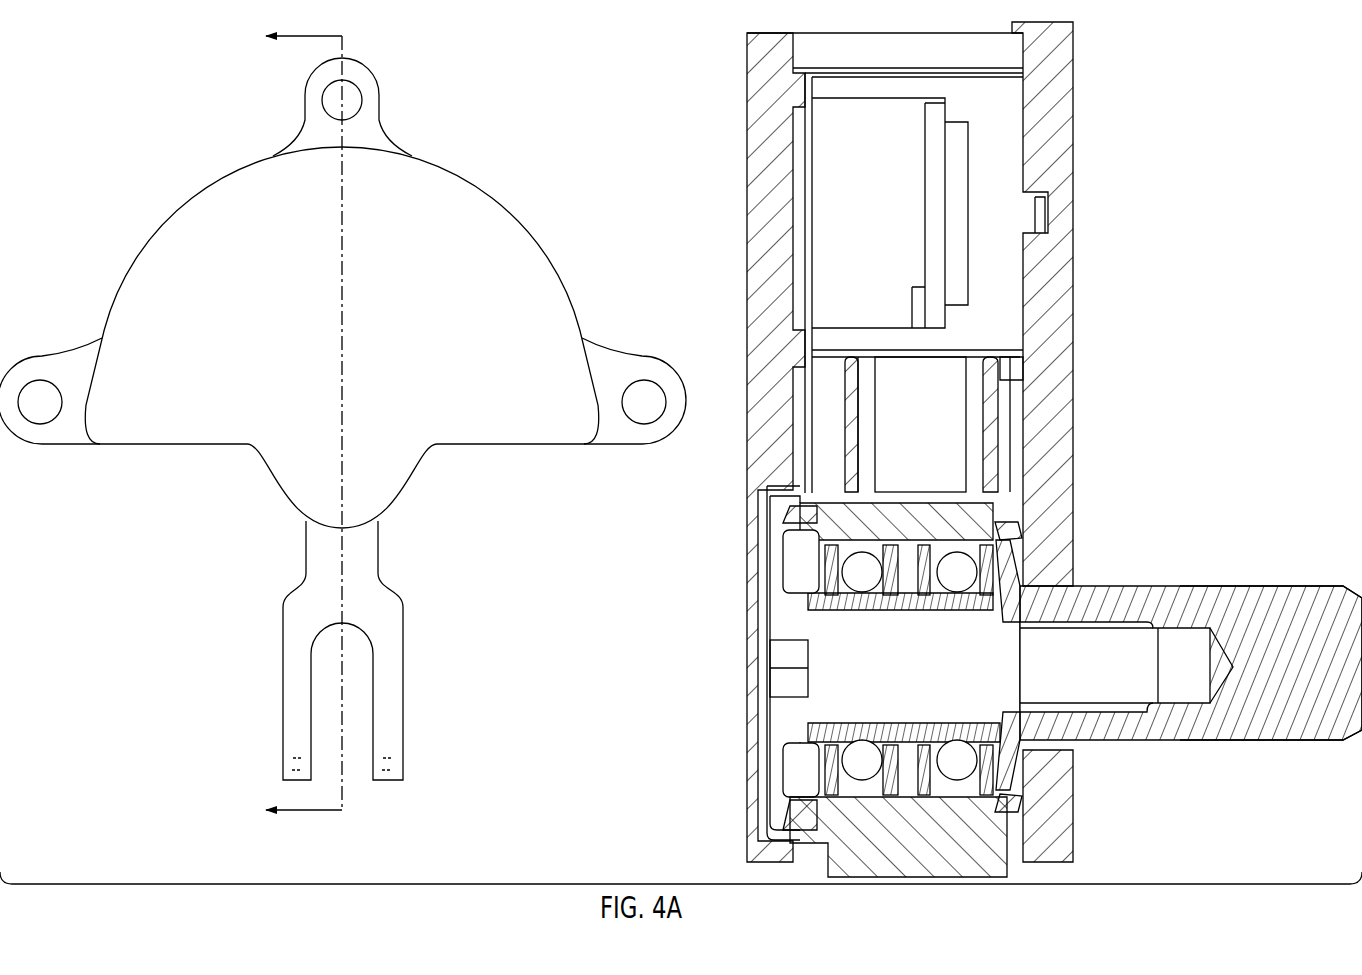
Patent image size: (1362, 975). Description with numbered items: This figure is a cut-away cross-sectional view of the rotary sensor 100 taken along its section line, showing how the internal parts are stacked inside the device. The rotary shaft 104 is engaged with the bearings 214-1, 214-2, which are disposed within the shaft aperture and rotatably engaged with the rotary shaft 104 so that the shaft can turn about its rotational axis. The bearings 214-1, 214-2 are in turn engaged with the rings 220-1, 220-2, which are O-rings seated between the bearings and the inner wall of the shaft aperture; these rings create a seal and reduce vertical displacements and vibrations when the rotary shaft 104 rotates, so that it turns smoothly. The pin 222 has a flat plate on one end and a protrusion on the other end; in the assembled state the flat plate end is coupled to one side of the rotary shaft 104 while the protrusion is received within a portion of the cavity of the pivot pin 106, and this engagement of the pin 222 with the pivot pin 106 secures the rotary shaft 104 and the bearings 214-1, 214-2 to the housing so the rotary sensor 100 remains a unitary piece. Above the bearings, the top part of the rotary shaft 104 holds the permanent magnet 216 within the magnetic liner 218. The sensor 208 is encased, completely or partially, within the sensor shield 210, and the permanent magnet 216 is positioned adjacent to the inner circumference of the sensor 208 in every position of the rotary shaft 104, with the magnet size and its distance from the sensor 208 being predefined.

The rotary sensor 100 is at (133, 200).
The rotary shaft 104 is at (870, 835).
The pivot pin 106 is at (1320, 586).
The sensor 208 is at (944, 177).
The sensor shield 210 is at (1017, 295).
The bearing 214-1 is at (1004, 570).
The bearing 214-2 is at (818, 762).
The permanent magnet 216 is at (953, 413).
The magnetic liner 218 is at (988, 445).
The ring 220-1 is at (1020, 530).
The ring 220-2 is at (782, 515).
The pin 222 is at (777, 718).